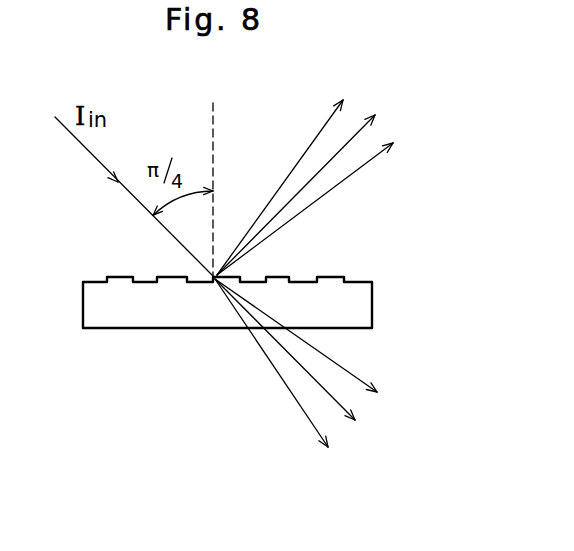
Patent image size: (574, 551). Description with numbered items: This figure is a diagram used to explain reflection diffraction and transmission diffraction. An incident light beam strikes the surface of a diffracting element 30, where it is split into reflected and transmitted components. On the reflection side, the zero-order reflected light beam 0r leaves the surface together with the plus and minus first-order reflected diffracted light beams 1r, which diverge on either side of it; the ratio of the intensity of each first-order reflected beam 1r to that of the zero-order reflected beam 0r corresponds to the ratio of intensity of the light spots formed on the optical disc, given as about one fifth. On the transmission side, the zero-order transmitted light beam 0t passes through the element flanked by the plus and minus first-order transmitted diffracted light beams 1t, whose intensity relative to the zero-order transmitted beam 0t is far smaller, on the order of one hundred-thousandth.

The diffraction grating 30 is at (360, 275).
The first-order reflected diffracted light beams 1r is at (332, 173).
The zero-order reflected light beam 0r is at (314, 187).
The first-order transmitted diffracted light beams 1t is at (322, 381).
The zero-order transmitted light beam 0t is at (302, 363).